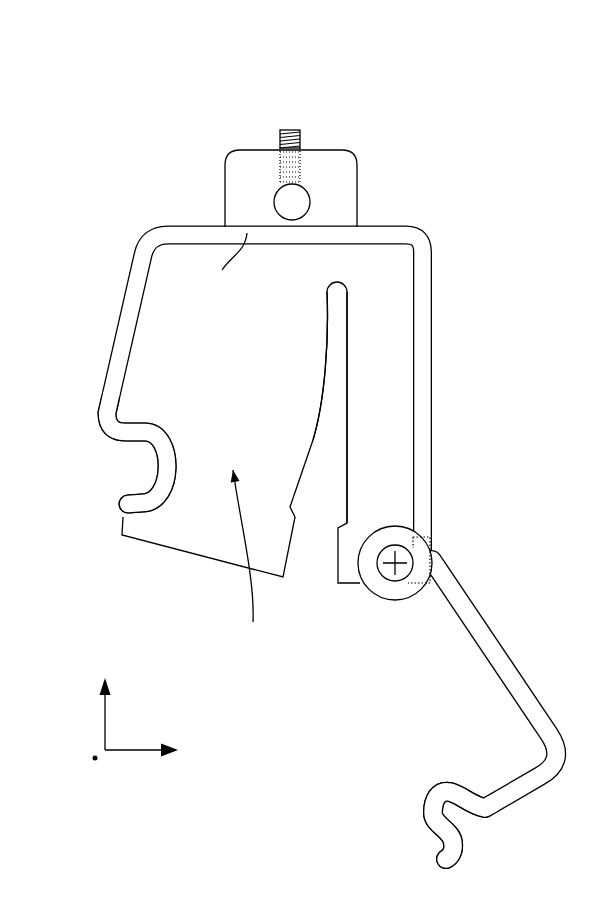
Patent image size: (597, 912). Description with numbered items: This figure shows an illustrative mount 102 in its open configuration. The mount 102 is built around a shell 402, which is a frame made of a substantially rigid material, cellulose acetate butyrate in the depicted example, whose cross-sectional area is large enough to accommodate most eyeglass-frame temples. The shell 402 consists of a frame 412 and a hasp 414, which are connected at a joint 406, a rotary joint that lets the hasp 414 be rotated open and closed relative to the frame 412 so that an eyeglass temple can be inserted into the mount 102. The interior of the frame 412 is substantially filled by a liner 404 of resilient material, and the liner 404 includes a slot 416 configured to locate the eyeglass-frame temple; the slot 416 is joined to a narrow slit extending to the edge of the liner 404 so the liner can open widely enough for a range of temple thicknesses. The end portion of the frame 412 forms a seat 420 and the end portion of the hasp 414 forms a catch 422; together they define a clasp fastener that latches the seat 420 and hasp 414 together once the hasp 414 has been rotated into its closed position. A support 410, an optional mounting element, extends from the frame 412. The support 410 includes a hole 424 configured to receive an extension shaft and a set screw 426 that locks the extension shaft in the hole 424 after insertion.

The mount 102 is at (121, 101).
The shell 402 is at (401, 227).
The liner 404 is at (295, 369).
The joint 406 is at (362, 598).
The support 410 is at (320, 168).
The frame 412 is at (420, 322).
The hasp 414 is at (488, 647).
The slot 416 is at (330, 435).
The seat 420 is at (130, 468).
The catch 422 is at (411, 795).
The hole 424 is at (291, 202).
The set screw 426 is at (293, 128).